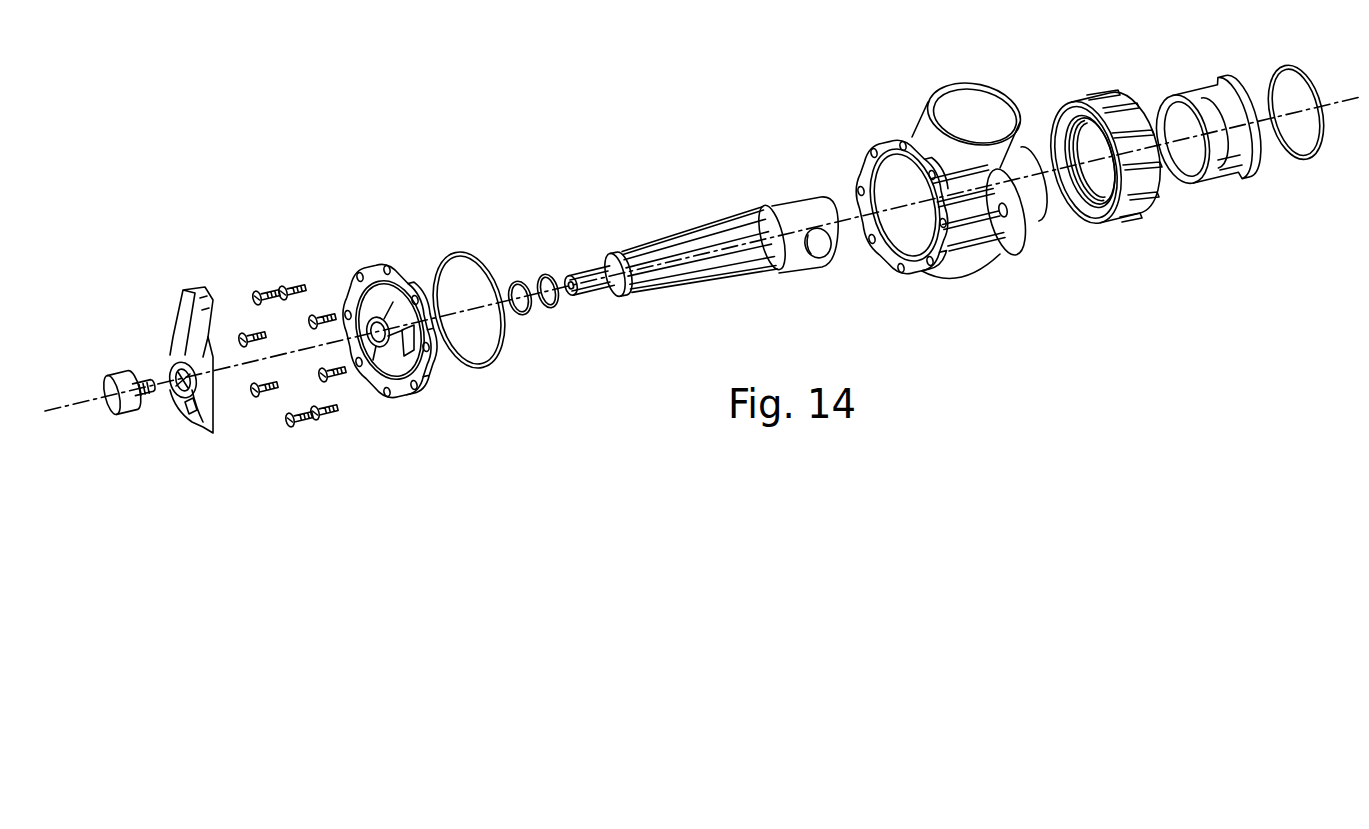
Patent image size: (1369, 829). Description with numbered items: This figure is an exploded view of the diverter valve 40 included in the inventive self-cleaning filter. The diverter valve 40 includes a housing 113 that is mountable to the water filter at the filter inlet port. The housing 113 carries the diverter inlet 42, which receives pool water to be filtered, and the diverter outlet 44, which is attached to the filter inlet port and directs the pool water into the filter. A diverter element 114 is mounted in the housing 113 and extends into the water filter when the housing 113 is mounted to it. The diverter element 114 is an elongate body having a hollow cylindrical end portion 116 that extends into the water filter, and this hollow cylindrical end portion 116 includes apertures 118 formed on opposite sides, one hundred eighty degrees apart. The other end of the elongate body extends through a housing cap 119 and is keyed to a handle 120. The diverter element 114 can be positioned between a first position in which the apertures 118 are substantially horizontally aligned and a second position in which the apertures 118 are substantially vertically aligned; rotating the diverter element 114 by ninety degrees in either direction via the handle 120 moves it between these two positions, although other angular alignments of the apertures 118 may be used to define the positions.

The diverter valve 40 is at (663, 308).
The diverter inlet 42 is at (973, 98).
The diverter outlet 44 is at (1040, 207).
The housing 113 is at (960, 280).
The diverter element 114 is at (717, 236).
The hollow cylindrical end portion 116 is at (824, 204).
The apertures 118 is at (781, 204).
The housing cap 119 is at (373, 272).
The handle 120 is at (178, 312).